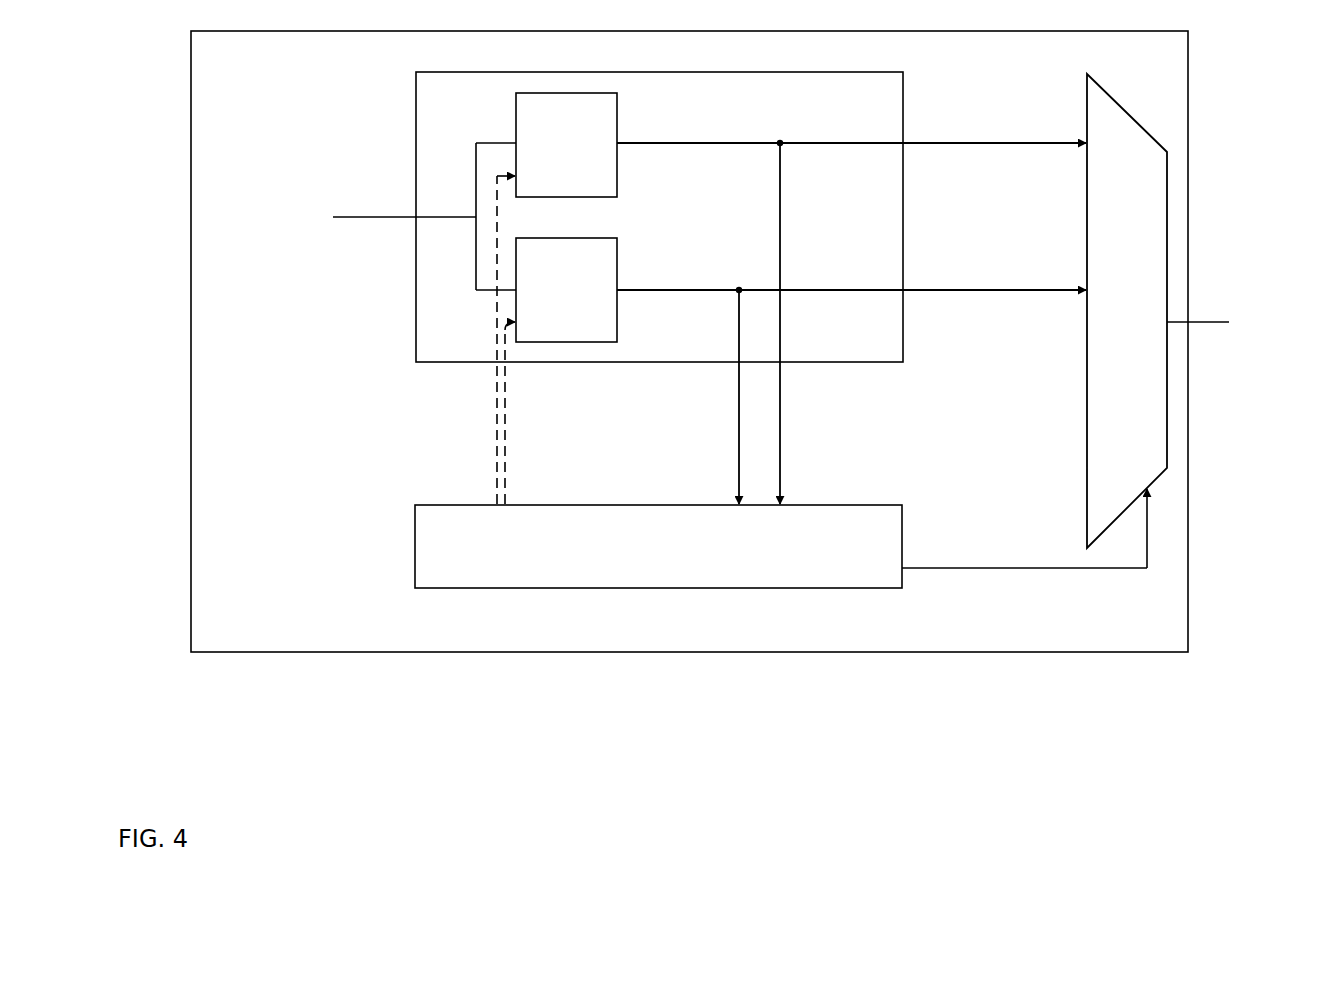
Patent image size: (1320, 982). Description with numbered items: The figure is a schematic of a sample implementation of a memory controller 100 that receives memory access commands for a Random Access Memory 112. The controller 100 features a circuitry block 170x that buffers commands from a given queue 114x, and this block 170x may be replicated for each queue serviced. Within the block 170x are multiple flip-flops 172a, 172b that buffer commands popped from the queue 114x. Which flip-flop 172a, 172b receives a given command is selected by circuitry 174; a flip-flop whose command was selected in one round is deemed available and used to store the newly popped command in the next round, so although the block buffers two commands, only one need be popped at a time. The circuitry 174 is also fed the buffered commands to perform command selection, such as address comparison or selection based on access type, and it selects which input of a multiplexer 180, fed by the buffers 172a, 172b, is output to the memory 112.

The memory controller 100 is at (243, 637).
The queue 114x is at (302, 246).
The circuitry block 170x is at (482, 111).
The flip-flop 172a is at (617, 107).
The flip-flop 172b is at (617, 252).
The circuitry 174 is at (680, 557).
The multiplexer 180 is at (1148, 322).
The Random Access Memory (RAM) 112 is at (1312, 351).